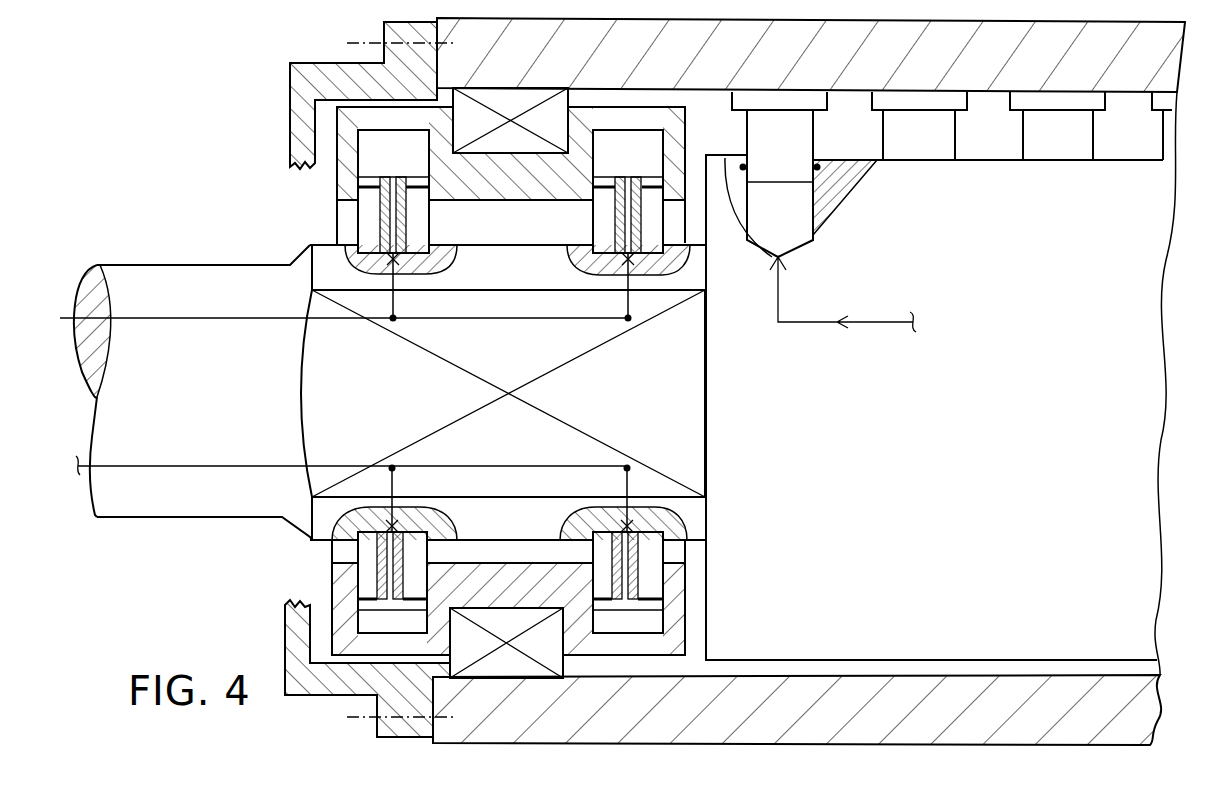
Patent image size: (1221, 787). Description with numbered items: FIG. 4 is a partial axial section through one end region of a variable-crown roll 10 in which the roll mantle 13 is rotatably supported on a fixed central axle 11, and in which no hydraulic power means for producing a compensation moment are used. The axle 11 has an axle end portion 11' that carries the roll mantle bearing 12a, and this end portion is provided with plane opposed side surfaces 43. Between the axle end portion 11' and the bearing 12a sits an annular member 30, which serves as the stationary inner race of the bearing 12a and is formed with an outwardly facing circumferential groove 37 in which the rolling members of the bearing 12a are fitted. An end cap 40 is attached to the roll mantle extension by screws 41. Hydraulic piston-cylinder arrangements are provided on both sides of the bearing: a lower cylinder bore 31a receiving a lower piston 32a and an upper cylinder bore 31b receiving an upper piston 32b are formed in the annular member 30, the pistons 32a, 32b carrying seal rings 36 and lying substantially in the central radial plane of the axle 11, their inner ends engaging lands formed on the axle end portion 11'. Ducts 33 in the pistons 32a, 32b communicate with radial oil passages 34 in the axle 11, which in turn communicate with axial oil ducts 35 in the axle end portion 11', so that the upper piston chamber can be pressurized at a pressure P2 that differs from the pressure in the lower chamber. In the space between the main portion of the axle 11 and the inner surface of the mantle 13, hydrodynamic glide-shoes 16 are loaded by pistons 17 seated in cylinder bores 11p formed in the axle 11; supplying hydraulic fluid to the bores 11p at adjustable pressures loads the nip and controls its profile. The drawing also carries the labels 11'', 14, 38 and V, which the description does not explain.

The variable-crown roll 10 is at (1084, 500).
The central axle 11 is at (1175, 529).
The axle end portion 11' is at (733, 493).
The camshaft end portion 11'' is at (193, 405).
The cylinder bore 11p is at (818, 262).
The roll mantle bearing 12a is at (512, 96).
The roll mantle 13 is at (1100, 690).
The bearing cap 14 is at (1117, 752).
The hydrodynamic glide-shoe 16 is at (825, 195).
The piston 17 is at (851, 206).
The annular member 30 is at (292, 100).
The lower cylinder bore 31a is at (640, 622).
The upper cylinder bore 31b is at (610, 145).
The lower piston 32a is at (665, 565).
The upper piston 32b is at (337, 226).
The duct 33 is at (730, 528).
The radial oil passage 34 is at (503, 392).
The axial oil duct 35 is at (222, 322).
The seal ring 36 is at (645, 580).
The circumferential groove 37 is at (538, 614).
The pin 38 is at (345, 268).
The end cap 40 is at (292, 140).
The screw 41 is at (347, 43).
The plane opposed side surface 43 is at (706, 420).
The second pressure P2 is at (292, 120).
The valve V is at (952, 157).